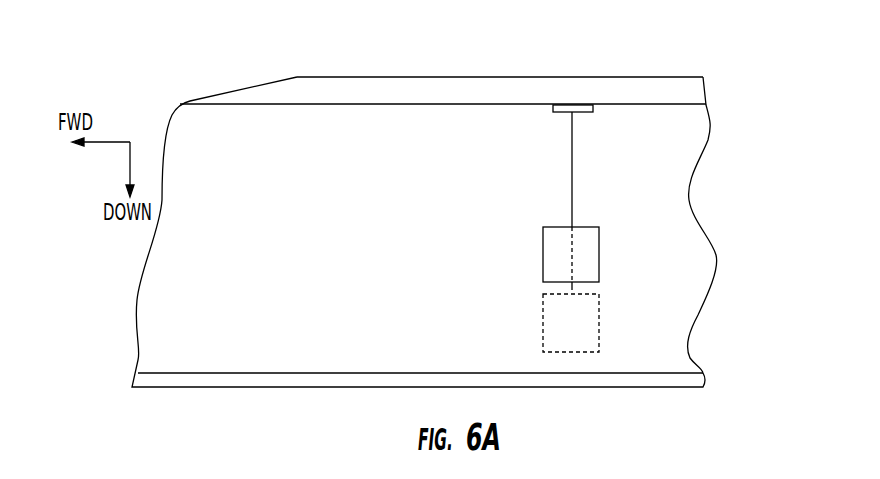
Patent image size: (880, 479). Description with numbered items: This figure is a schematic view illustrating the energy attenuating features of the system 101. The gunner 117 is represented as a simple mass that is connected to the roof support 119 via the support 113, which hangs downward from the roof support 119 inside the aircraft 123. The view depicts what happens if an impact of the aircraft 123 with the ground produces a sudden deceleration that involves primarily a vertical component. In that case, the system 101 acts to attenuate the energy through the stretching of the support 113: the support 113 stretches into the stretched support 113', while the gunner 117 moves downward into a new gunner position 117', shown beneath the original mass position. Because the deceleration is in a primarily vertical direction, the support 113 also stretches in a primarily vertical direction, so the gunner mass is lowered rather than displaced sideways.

The system 101 is at (506, 143).
The support 113 is at (622, 169).
The stretched support 113' is at (630, 262).
The gunner 117 is at (532, 254).
The new gunner position 117' is at (532, 318).
The roof support 119 is at (578, 103).
The aircraft 123 is at (630, 77).